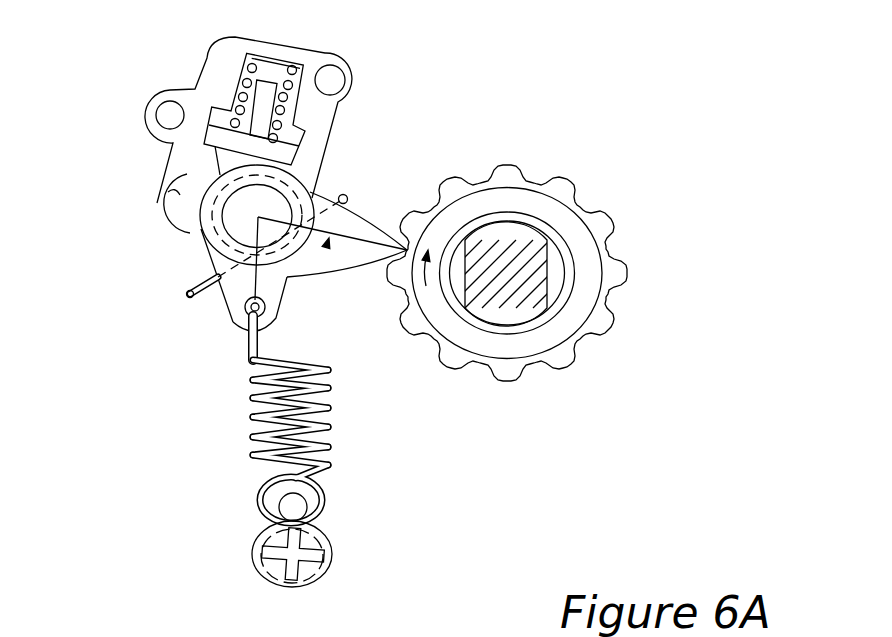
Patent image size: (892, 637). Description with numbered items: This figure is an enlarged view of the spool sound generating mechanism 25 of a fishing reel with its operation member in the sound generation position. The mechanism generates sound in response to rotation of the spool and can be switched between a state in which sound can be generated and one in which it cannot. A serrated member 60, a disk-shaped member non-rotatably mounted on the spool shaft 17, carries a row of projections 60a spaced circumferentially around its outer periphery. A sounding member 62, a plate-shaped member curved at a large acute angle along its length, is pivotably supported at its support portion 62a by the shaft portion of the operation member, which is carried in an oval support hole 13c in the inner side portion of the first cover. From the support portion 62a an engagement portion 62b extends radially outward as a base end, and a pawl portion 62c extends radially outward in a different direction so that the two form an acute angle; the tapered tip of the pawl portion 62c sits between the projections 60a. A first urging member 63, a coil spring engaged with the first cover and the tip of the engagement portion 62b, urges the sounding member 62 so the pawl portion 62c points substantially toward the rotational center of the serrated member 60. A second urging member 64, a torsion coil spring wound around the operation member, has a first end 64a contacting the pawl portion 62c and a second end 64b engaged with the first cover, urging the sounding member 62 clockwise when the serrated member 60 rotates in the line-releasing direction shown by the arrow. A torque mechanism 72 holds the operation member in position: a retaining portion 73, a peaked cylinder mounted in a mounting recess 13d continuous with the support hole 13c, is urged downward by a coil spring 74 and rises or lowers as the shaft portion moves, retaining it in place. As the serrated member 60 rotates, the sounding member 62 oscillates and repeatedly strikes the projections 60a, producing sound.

The torque mechanism 72 is at (228, 78).
The coil spring 74 is at (297, 58).
The retaining portion 73 is at (262, 112).
The mounting recess 13d is at (305, 136).
The support hole 13c is at (165, 212).
The spool sound generating mechanism 25 is at (463, 118).
The serrated member 60 is at (560, 271).
The projections 60a is at (604, 222).
The spool shaft 17 is at (508, 235).
The sounding member 62 is at (286, 254).
The support portion 62a is at (197, 233).
The engagement portion 62b is at (273, 313).
The pawl portion 62c is at (353, 247).
The second urging member 64 is at (220, 252).
The first end 64a is at (346, 196).
The second end 64b is at (188, 298).
The first urging member 63 is at (330, 407).